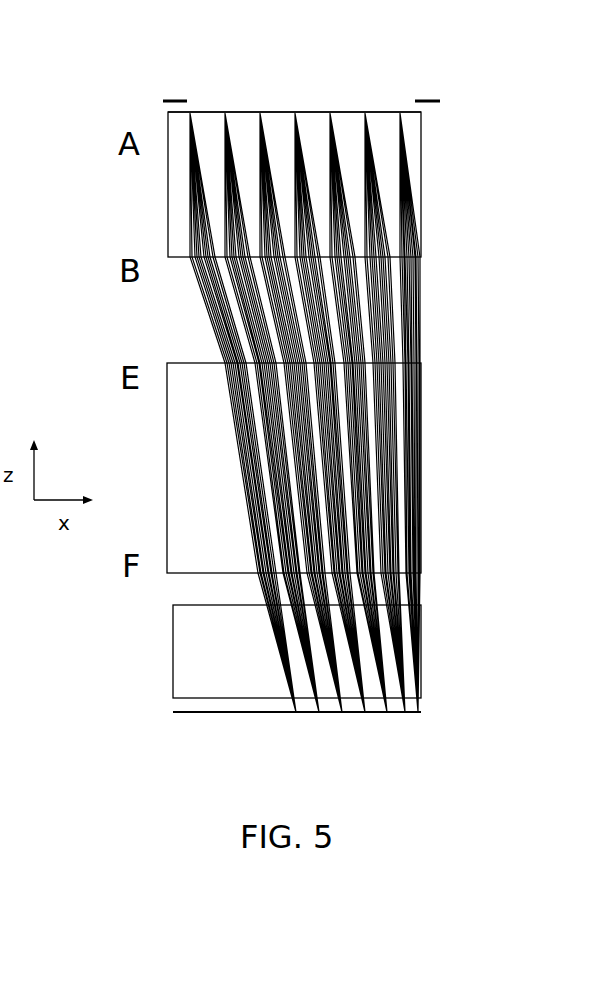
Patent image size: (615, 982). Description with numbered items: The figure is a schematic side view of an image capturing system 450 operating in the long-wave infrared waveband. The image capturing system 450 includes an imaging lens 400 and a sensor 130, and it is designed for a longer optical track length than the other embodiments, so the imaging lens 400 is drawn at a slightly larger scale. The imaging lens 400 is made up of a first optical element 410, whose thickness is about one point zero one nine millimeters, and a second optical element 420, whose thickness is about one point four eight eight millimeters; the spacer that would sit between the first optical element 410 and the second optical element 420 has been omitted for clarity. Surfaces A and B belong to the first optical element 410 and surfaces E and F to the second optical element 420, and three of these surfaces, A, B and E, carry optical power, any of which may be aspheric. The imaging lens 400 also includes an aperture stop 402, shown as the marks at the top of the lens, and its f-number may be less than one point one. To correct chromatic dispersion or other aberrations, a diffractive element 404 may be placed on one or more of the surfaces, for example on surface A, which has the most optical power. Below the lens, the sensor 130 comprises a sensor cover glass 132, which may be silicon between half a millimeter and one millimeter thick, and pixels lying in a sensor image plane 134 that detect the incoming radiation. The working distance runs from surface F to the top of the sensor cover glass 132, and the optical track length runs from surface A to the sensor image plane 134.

The imaging lens 400 is at (387, 342).
The aperture stop 402 is at (162, 94).
The diffractive element 404 is at (322, 352).
The first optical element 410 is at (323, 184).
The second optical element 420 is at (328, 468).
The image capturing system 450 is at (322, 76).
The sensor 130 is at (387, 648).
The sensor cover glass 132 is at (345, 649).
The sensor image plane 134 is at (345, 687).